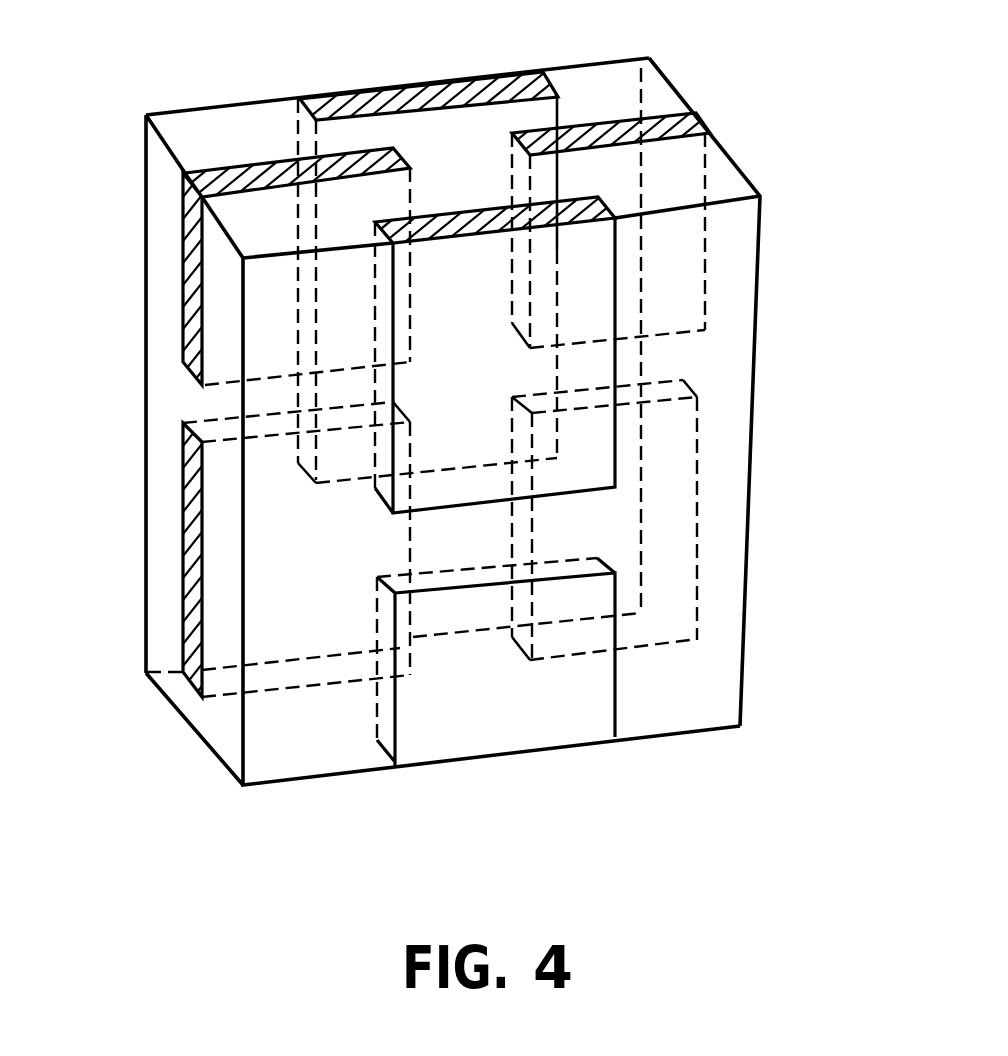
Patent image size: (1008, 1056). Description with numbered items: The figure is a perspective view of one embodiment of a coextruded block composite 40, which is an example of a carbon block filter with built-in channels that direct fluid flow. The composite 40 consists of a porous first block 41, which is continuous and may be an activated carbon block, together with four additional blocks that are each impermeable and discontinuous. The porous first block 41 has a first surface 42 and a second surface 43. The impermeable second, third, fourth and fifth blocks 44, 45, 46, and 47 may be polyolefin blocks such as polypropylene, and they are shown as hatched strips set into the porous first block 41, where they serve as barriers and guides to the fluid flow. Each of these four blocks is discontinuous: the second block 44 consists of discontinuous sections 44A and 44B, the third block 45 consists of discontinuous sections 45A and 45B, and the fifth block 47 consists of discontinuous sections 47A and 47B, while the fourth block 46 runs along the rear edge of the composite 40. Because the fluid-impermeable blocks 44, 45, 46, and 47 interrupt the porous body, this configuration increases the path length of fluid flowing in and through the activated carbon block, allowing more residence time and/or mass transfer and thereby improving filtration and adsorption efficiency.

The coextruded block composite 40 is at (759, 464).
The porous first block 41 is at (738, 192).
The first surface 42 is at (727, 372).
The second surface 43 is at (222, 125).
The second block 44 is at (462, 213).
The discontinuous section 44A is at (615, 307).
The discontinuous section 44B is at (615, 683).
The third block 45 is at (667, 112).
The discontinuous section 45A is at (710, 183).
The discontinuous section 45B is at (697, 535).
The fourth block 46 is at (433, 93).
The fifth block 47 is at (277, 168).
The discontinuous section 47A is at (190, 290).
The discontinuous section 47B is at (192, 572).